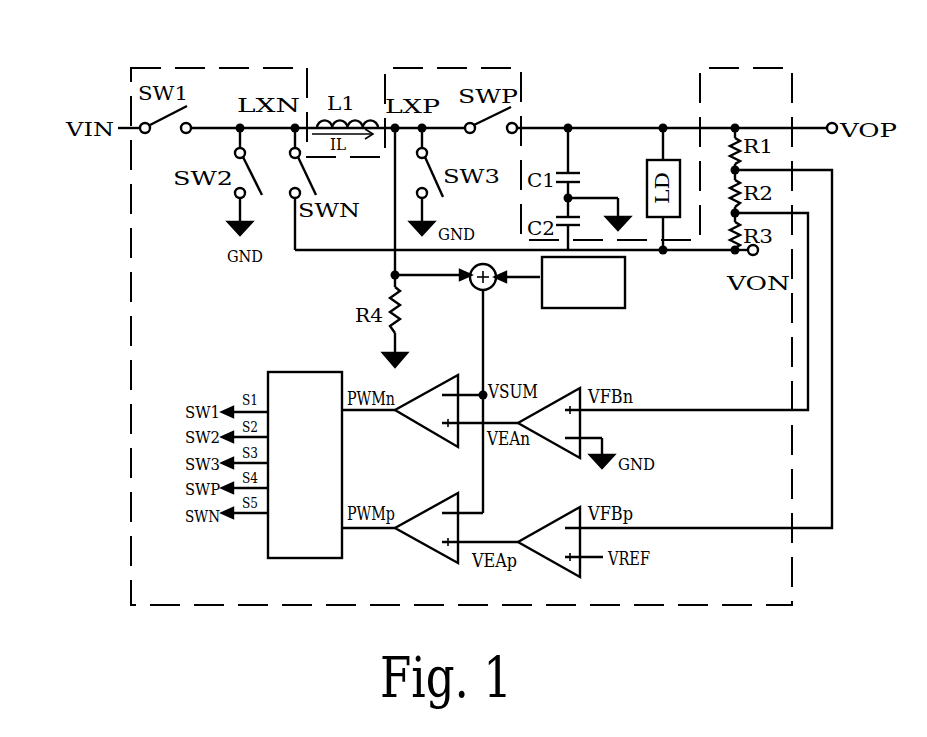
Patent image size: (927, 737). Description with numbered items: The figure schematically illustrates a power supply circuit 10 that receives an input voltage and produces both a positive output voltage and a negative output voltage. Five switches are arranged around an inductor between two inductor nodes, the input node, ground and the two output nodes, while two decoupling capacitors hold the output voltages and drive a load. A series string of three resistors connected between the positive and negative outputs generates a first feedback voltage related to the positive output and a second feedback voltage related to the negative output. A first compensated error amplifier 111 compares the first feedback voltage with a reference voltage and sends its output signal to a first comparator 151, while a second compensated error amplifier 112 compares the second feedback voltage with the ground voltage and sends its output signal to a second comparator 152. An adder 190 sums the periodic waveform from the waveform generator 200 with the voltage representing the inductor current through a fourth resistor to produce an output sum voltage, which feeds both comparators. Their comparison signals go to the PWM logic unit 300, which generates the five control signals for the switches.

The power supply circuit 10 is at (723, 68).
The waveform generator 200 is at (623, 298).
The adder 190 is at (468, 290).
The PWM logic unit 300 is at (313, 380).
The second comparator 152 is at (403, 422).
The first comparator 151 is at (405, 540).
The second compensated error amplifier 112 is at (553, 445).
The first compensated error amplifier 111 is at (565, 563).